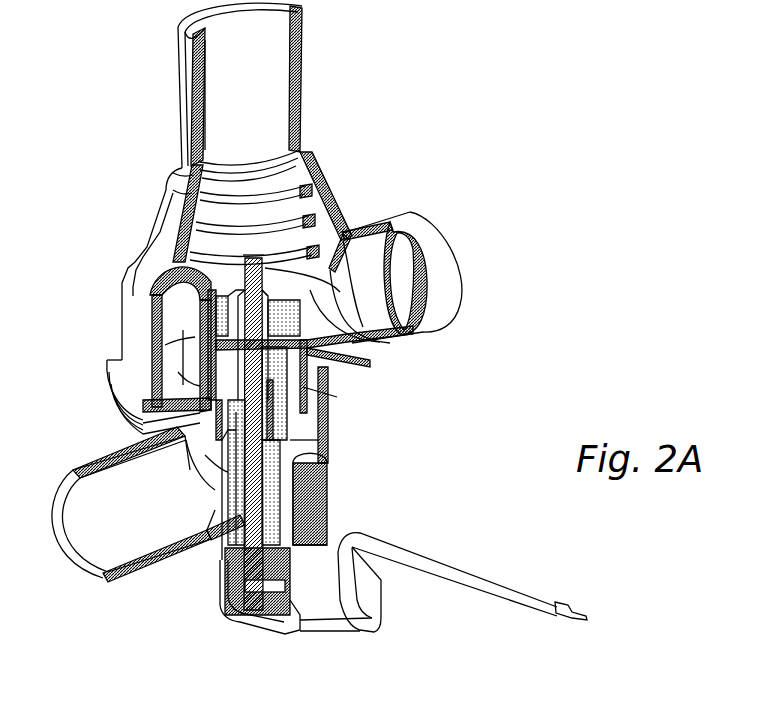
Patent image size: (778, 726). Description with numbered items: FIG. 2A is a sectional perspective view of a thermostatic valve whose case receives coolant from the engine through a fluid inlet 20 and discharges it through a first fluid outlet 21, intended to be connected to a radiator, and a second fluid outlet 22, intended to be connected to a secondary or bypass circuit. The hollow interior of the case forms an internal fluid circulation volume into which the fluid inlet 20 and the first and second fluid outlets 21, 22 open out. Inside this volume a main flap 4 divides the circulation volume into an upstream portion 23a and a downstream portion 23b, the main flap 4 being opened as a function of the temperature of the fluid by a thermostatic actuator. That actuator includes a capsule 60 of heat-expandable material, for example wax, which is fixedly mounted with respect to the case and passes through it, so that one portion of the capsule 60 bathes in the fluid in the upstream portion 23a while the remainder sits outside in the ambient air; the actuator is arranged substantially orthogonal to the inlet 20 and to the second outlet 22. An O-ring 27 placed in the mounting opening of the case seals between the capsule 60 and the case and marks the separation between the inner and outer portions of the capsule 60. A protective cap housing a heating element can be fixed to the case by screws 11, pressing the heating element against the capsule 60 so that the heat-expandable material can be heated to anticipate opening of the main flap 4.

The first fluid outlet 21 is at (303, 50).
The downstream portion 23b is at (277, 80).
The main flap 4 is at (255, 262).
The fluid inlet 20 is at (447, 257).
The upstream portion 23a is at (380, 318).
The second fluid outlet 22 is at (138, 570).
The capsule 60 is at (293, 433).
The O-ring 27 is at (327, 497).
The screws 11 is at (300, 547).